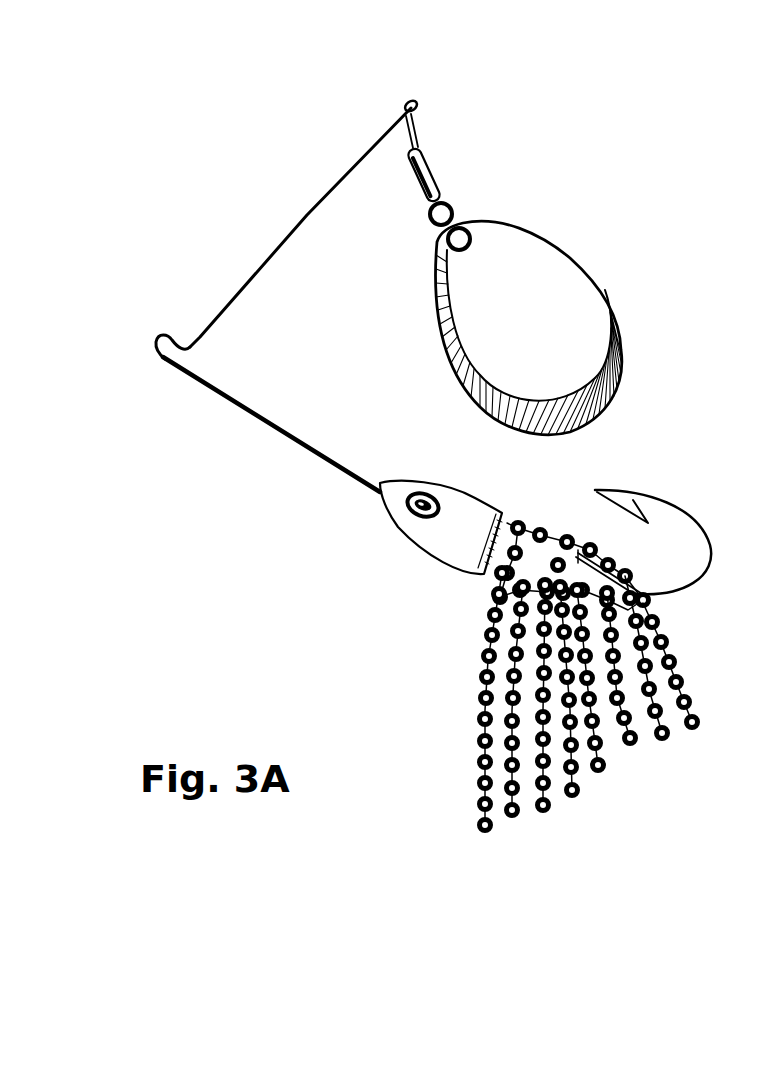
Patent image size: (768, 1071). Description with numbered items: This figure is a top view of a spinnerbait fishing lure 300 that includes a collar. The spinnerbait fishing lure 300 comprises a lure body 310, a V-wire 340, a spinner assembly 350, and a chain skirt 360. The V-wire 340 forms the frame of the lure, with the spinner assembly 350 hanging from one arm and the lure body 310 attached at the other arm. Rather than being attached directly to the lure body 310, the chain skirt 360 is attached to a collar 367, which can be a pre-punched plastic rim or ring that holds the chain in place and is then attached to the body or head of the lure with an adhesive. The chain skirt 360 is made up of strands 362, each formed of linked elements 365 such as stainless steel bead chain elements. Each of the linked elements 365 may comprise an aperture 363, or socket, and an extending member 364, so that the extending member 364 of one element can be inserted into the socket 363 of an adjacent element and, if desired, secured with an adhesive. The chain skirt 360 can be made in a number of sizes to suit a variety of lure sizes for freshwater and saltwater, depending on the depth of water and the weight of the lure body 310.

The spinnerbait fishing lure 300 is at (203, 78).
The V-wire 340 is at (307, 215).
The spinner assembly 350 is at (580, 186).
The lure body 310 is at (420, 533).
The collar 367 is at (510, 522).
The extending member 364 is at (640, 588).
The chain skirt 360 is at (445, 599).
The aperture 363 is at (480, 705).
The strands 362 is at (478, 797).
The linked elements 365 is at (606, 764).